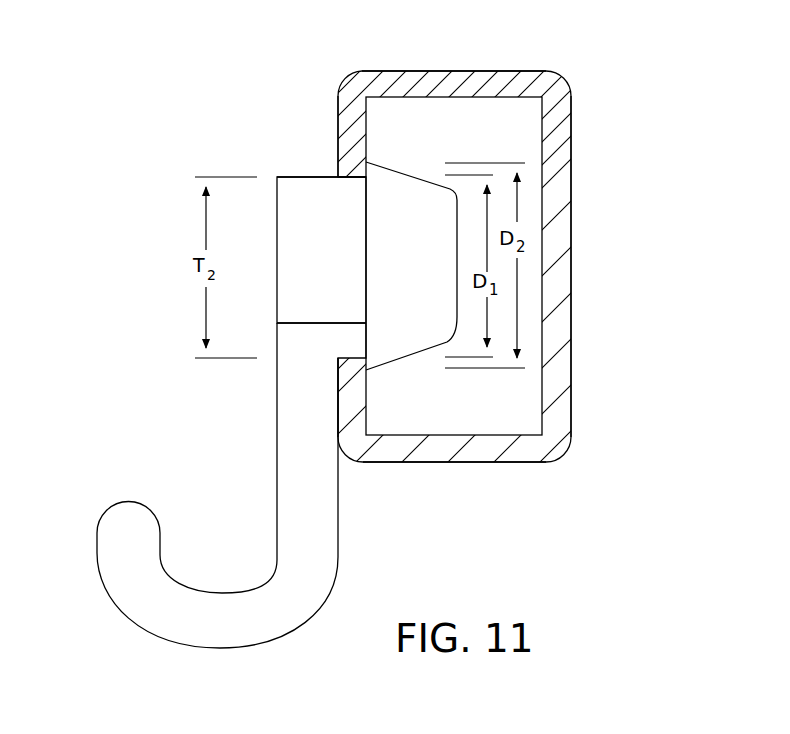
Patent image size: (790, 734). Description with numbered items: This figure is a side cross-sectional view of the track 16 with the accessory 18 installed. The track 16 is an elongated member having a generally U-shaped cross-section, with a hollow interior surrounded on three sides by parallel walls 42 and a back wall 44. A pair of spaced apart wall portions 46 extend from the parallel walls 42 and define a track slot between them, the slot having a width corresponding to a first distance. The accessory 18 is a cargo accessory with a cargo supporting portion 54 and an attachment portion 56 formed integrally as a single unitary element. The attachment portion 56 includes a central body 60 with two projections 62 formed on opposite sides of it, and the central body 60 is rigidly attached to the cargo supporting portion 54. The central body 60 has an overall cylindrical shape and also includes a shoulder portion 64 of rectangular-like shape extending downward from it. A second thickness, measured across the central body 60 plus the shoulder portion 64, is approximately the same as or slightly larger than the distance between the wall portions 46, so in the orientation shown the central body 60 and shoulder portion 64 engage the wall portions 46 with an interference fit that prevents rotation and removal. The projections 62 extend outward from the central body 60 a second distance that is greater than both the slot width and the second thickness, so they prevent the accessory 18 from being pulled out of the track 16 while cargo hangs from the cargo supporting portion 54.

The track 16 is at (496, 42).
The accessory 18 is at (201, 390).
The parallel walls 42 is at (430, 85).
The back wall 44 is at (557, 312).
The wall portions 46 is at (337, 131).
The cargo supporting portion 54 is at (127, 523).
The attachment portion 56 is at (306, 175).
The central body 60 is at (312, 232).
The projections 62 is at (407, 205).
The shoulder portion 64 is at (352, 340).